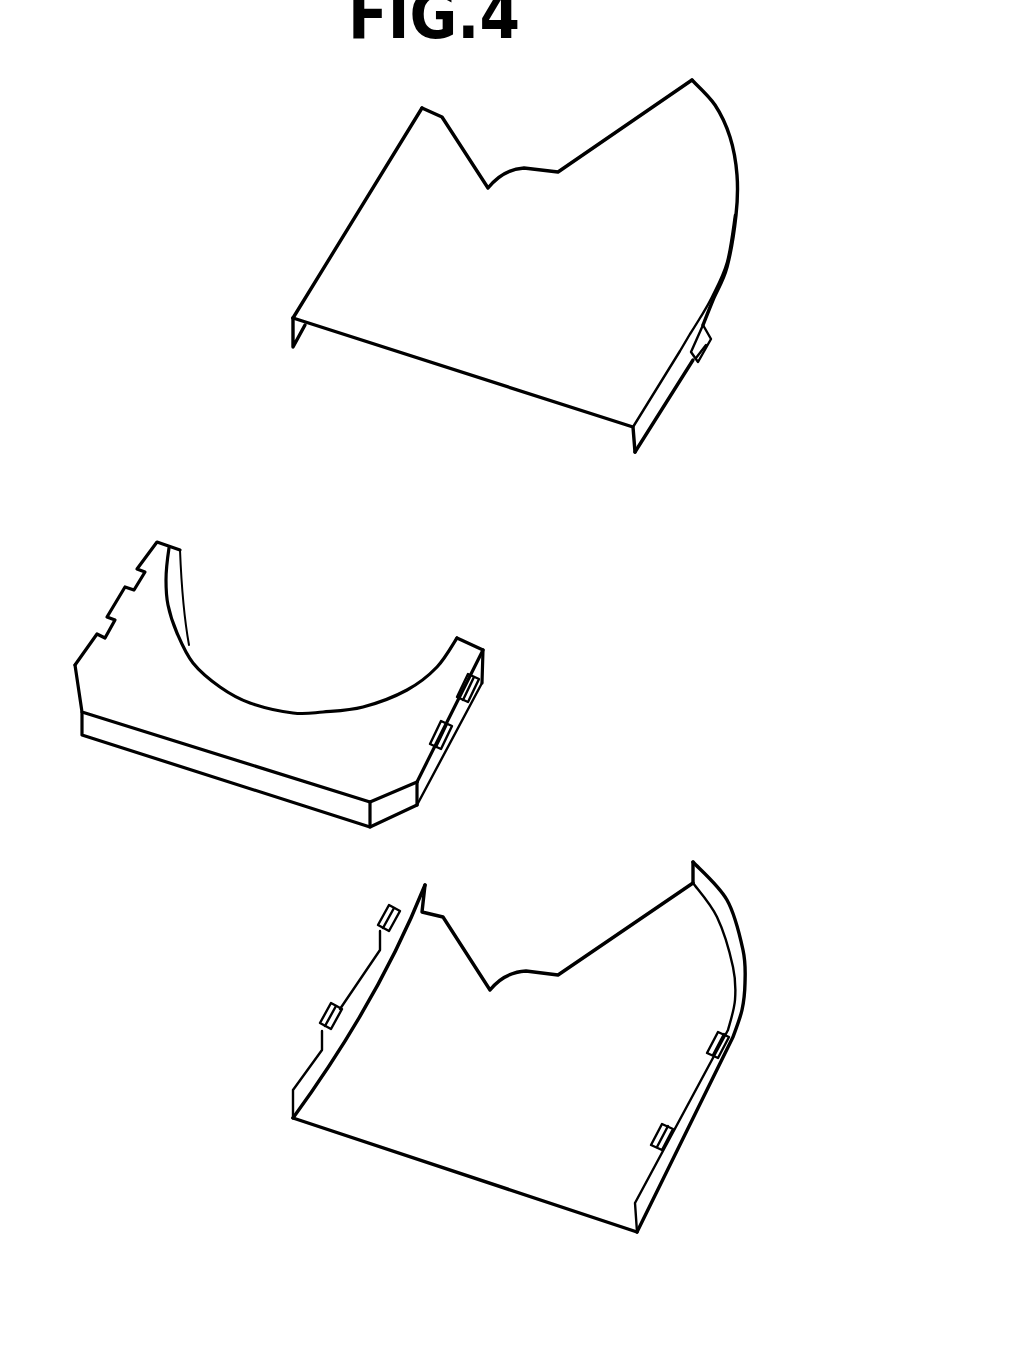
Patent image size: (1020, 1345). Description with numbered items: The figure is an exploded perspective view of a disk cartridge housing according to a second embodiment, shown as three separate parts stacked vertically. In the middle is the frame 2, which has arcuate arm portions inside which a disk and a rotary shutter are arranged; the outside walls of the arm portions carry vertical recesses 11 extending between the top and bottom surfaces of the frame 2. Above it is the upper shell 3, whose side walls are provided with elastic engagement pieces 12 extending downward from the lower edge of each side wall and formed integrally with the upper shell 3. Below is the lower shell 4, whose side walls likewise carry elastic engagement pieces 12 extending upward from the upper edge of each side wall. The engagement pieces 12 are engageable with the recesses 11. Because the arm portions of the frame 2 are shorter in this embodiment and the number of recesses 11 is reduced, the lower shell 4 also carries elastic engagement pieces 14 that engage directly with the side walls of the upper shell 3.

The frame 2 is at (150, 742).
The upper shell 3 is at (630, 135).
The lower shell 4 is at (451, 1156).
The vertical recesses 11 is at (99, 632).
The elastic engagement pieces 12 is at (712, 343).
The elastic engagement pieces 14 is at (378, 918).